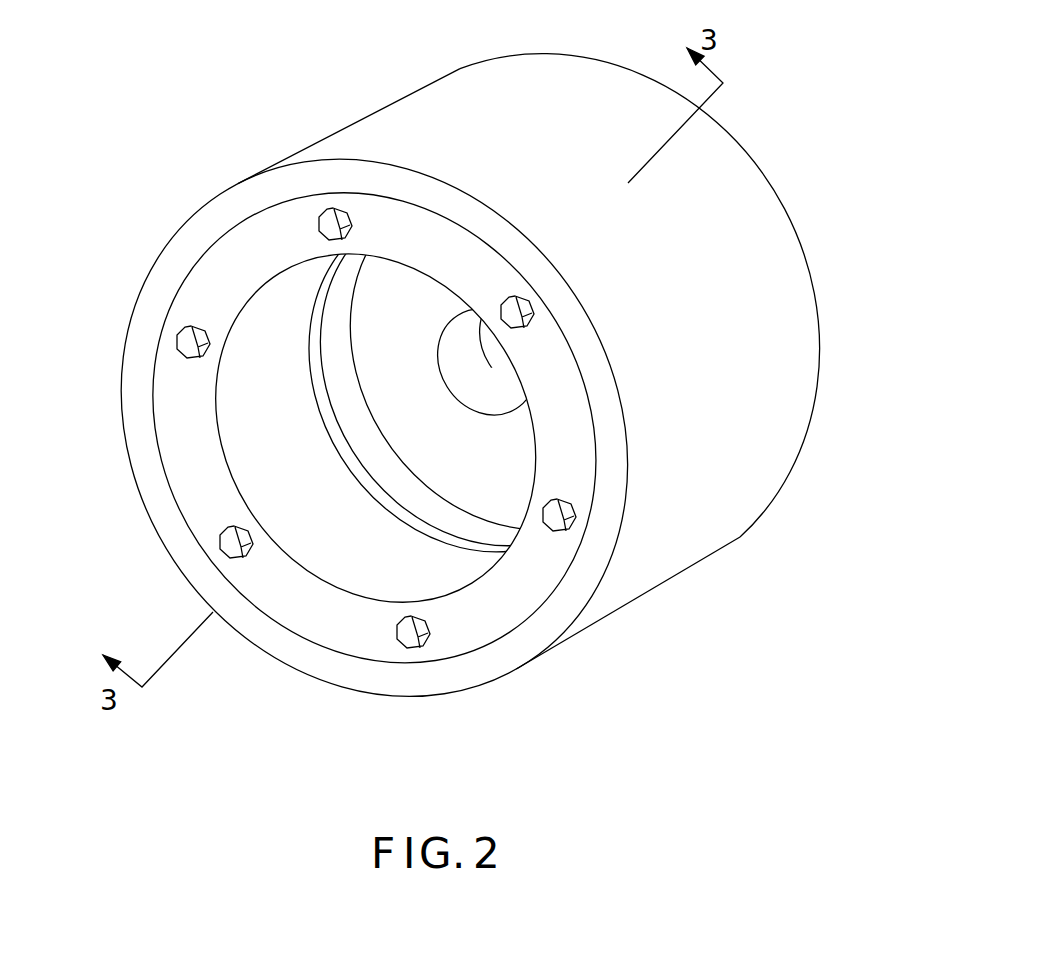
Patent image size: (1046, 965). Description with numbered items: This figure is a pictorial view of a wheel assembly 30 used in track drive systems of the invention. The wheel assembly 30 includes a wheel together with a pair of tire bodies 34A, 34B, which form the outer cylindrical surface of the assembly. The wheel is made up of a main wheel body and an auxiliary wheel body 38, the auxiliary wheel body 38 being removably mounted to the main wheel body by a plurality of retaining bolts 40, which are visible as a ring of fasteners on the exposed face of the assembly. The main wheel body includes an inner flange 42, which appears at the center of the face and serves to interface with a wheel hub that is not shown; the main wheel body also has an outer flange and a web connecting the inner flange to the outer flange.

The wheel assembly 30 is at (742, 215).
The tire body 34A is at (795, 348).
The tire body 34B is at (665, 445).
The auxiliary wheel body 38 is at (185, 417).
The retaining bolts 40 is at (408, 633).
The inner flange 42 is at (408, 362).